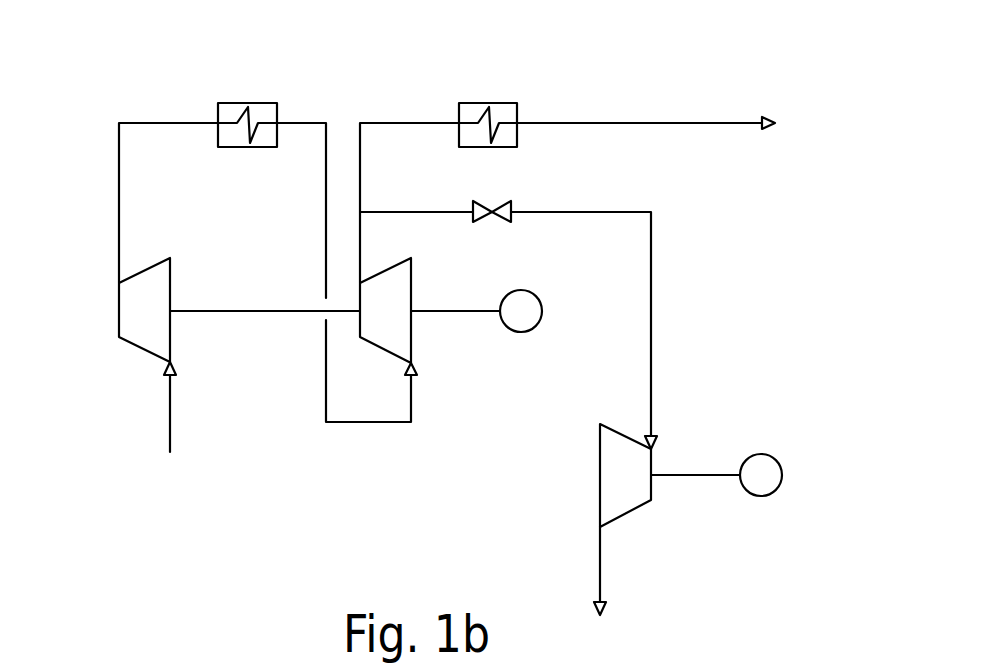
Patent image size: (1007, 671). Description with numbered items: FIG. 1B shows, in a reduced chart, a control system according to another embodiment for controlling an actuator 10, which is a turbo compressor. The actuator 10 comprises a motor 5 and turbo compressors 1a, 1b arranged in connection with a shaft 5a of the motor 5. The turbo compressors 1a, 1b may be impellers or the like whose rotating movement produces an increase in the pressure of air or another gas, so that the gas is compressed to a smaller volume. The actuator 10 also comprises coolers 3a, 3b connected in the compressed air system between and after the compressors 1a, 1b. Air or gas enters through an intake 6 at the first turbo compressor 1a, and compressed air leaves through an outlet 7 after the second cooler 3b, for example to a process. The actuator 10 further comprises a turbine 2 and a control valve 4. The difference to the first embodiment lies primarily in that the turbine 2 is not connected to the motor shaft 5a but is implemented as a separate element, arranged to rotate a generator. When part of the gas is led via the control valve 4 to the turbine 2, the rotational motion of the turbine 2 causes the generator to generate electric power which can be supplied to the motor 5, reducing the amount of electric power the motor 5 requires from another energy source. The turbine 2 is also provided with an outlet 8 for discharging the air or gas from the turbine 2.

The actuator 10 is at (740, 54).
The turbo compressor 1a is at (119, 318).
The turbo compressor 1b is at (412, 334).
The turbine 2 is at (600, 499).
The cooler 3a is at (223, 139).
The cooler 3b is at (463, 139).
The control valve 4 is at (487, 220).
The motor 5 is at (542, 311).
The shaft 5a is at (712, 476).
The intake 6 is at (170, 435).
The outlet 7 is at (767, 128).
The outlet 8 is at (600, 595).